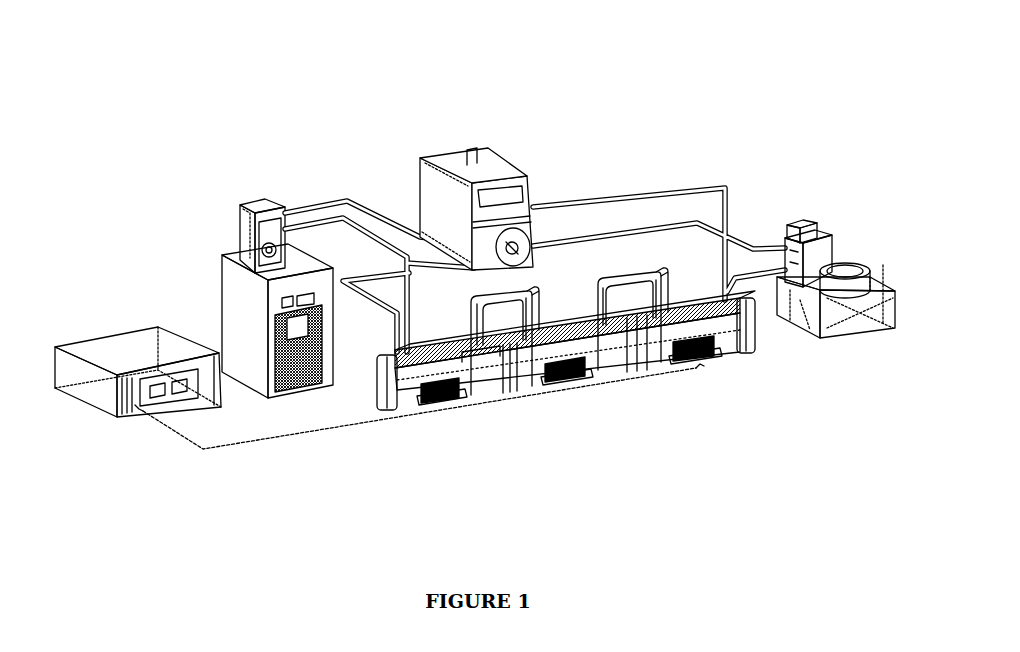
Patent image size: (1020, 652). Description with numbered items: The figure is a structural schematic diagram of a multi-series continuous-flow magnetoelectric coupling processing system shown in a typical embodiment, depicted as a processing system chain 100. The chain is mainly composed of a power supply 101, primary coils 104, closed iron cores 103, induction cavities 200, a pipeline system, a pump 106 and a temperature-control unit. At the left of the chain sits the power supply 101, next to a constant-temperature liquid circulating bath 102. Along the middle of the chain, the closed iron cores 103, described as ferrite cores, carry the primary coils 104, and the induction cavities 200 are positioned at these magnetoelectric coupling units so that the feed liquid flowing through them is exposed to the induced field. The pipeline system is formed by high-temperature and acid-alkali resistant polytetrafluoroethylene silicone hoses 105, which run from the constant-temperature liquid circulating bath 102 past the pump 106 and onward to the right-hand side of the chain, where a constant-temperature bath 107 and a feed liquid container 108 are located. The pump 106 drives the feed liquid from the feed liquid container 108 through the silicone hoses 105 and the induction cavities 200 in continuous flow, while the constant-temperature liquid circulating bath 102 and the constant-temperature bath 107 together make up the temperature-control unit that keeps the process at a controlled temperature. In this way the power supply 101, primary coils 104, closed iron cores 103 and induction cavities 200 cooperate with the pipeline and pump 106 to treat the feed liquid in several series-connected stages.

The processing system chain 100 is at (362, 192).
The power supply 101 is at (134, 414).
The constant-temperature liquid circulating bath 102 is at (289, 390).
The closed iron core 103 is at (391, 402).
The primary coil 104 is at (434, 396).
The silicone hose 105 is at (504, 320).
The pump 106 is at (453, 155).
The constant-temperature bath 107 is at (802, 216).
The feed liquid container 108 is at (843, 266).
The induction cavity 200 is at (476, 360).